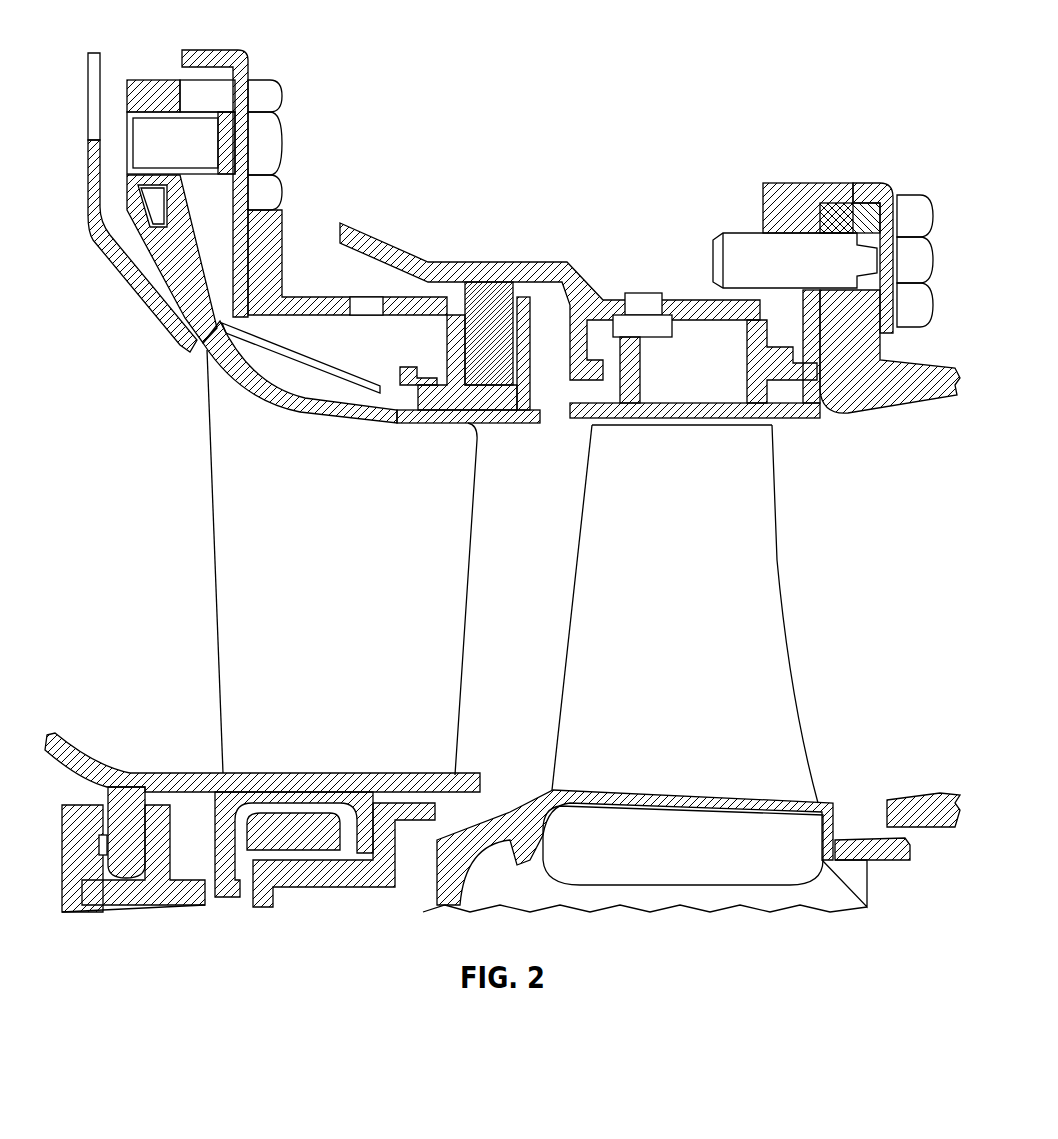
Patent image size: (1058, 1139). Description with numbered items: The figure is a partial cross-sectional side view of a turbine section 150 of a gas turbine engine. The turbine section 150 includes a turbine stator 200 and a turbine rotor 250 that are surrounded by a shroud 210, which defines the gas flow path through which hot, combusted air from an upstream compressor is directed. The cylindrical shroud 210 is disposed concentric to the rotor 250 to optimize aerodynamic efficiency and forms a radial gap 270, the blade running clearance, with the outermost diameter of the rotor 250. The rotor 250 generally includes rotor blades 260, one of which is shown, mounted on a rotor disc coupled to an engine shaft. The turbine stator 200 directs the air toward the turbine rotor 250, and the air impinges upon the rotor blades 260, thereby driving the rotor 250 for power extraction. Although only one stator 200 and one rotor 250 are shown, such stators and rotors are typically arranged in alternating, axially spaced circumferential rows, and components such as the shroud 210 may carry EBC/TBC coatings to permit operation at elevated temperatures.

The turbine section 150 is at (388, 176).
The turbine stator 200 is at (233, 617).
The shroud 210 is at (704, 392).
The turbine rotor 250 is at (815, 695).
The rotor blade 260 is at (760, 563).
The radial gap 270 is at (590, 423).